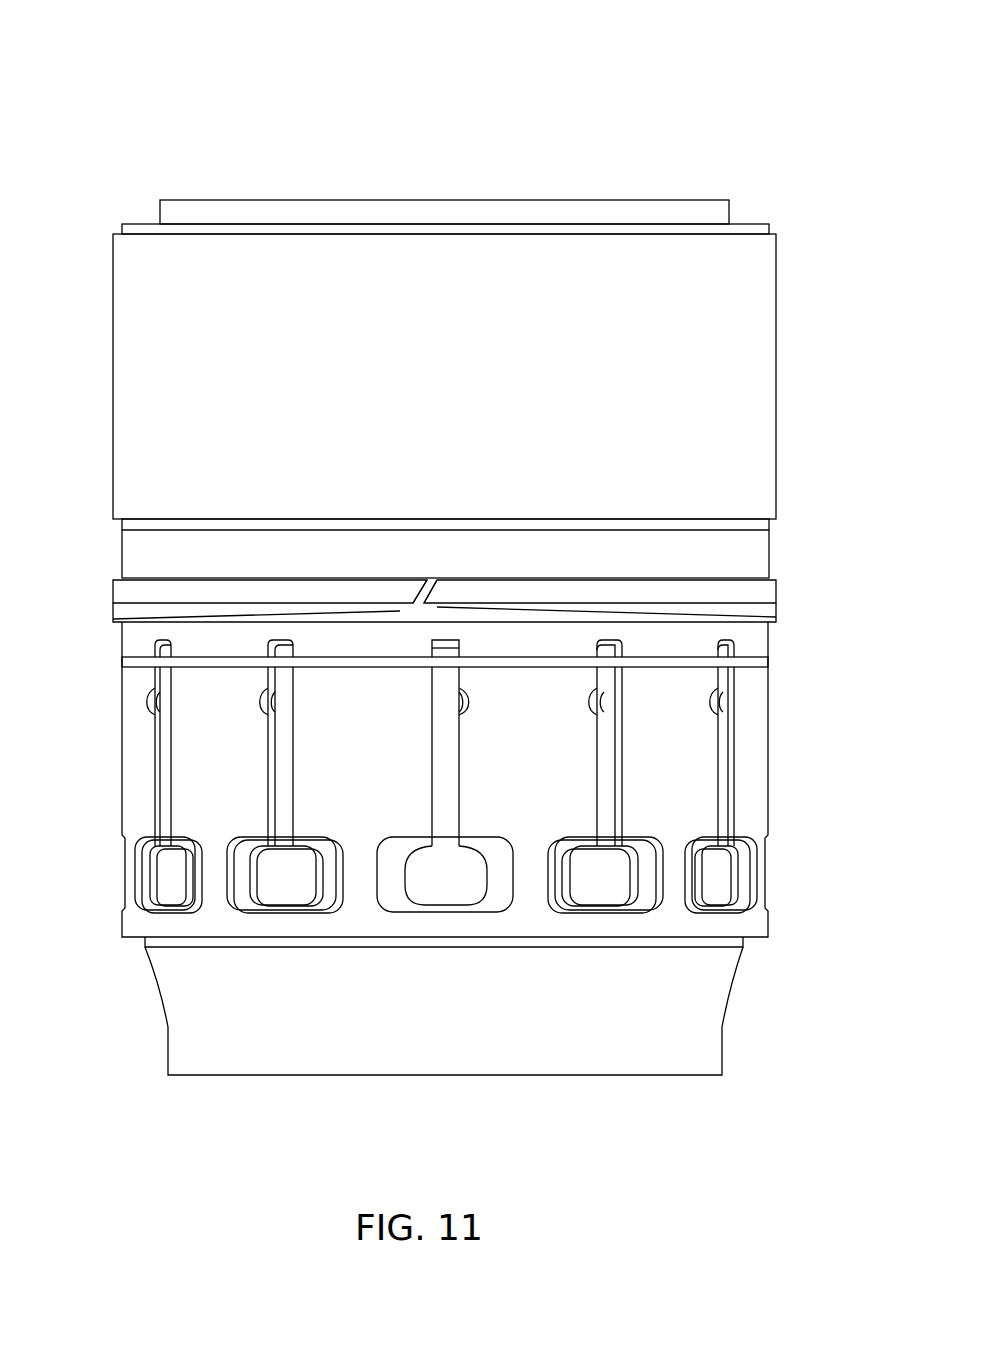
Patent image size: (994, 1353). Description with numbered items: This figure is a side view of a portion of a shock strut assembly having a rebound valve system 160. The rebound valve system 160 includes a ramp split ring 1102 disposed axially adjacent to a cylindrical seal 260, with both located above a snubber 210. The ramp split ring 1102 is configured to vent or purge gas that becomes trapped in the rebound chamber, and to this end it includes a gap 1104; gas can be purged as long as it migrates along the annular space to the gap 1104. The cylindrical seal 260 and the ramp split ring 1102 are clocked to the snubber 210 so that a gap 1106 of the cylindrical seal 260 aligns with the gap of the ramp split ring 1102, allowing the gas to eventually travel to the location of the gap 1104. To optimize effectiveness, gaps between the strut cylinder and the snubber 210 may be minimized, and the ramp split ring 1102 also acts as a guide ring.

The rebound valve system 160 is at (153, 62).
The snubber 210 is at (755, 732).
The cylindrical seal 260 is at (752, 591).
The ramp split ring 1102 is at (732, 608).
The gap 1104 is at (398, 605).
The gap 1106 is at (428, 602).